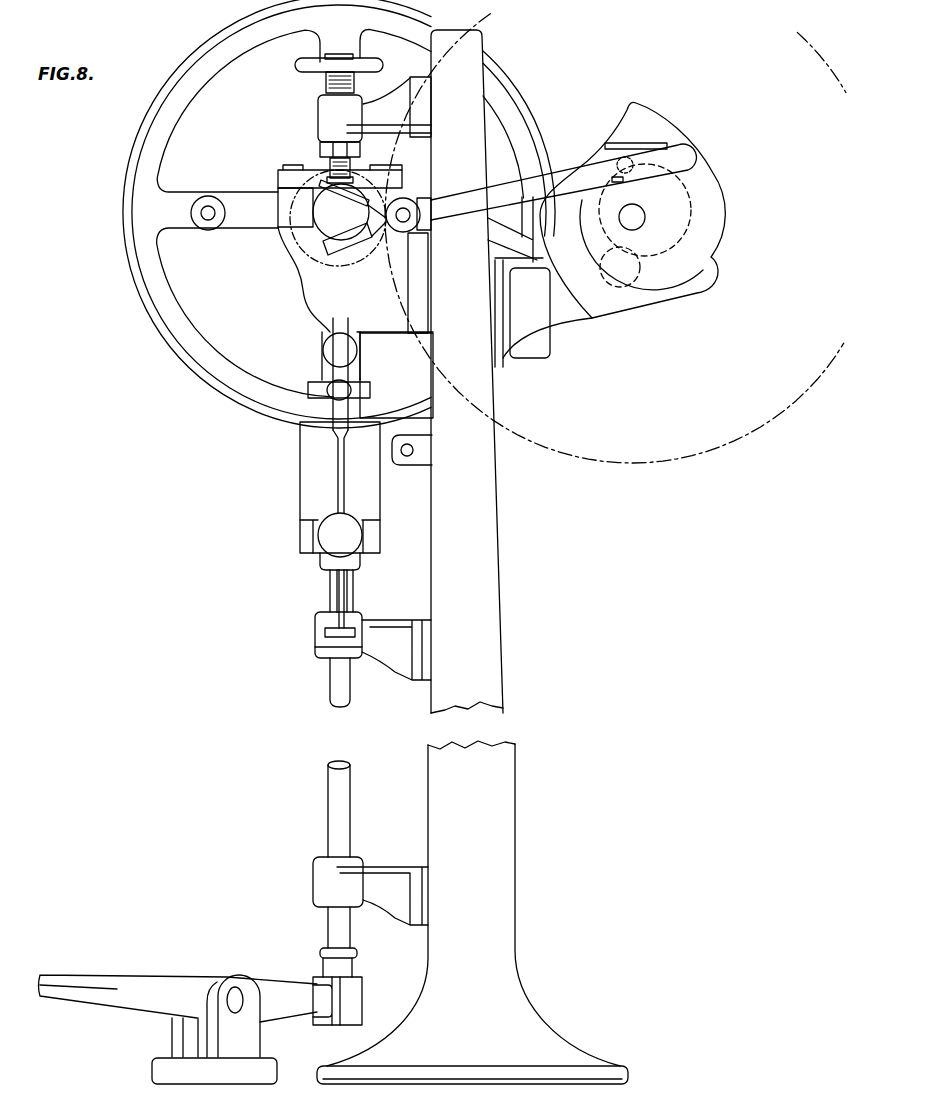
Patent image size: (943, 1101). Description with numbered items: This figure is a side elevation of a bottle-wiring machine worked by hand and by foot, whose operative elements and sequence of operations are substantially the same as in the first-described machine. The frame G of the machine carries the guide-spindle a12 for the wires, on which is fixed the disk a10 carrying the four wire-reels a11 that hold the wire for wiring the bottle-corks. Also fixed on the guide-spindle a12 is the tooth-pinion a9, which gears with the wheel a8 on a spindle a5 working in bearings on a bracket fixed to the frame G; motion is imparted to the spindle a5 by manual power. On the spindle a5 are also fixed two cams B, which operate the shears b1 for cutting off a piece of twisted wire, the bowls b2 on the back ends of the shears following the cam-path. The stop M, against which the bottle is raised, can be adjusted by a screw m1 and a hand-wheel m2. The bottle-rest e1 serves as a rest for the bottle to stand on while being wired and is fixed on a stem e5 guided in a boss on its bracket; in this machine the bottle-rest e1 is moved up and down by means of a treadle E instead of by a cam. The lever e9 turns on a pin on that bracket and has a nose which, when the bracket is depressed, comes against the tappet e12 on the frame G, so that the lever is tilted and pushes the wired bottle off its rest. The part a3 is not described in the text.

The disk a10 is at (339, 214).
The wire-reels a11 is at (208, 222).
The hand-wheel m2 is at (383, 63).
The screw m1 is at (356, 82).
The stop M is at (319, 172).
The guide-spindle a12 is at (341, 212).
The tooth-pinion a9 is at (330, 263).
The shears b1 is at (352, 213).
The boss a3 is at (355, 265).
The lever e9 is at (338, 457).
The bottle-rest e1 is at (303, 490).
The tappet e12 is at (325, 634).
The stem e5 is at (330, 687).
The frame G is at (482, 445).
The wheel a8 is at (615, 238).
The cams B is at (578, 234).
The spindle a5 is at (646, 217).
The bowls b2 is at (648, 266).
The treadle E is at (234, 922).